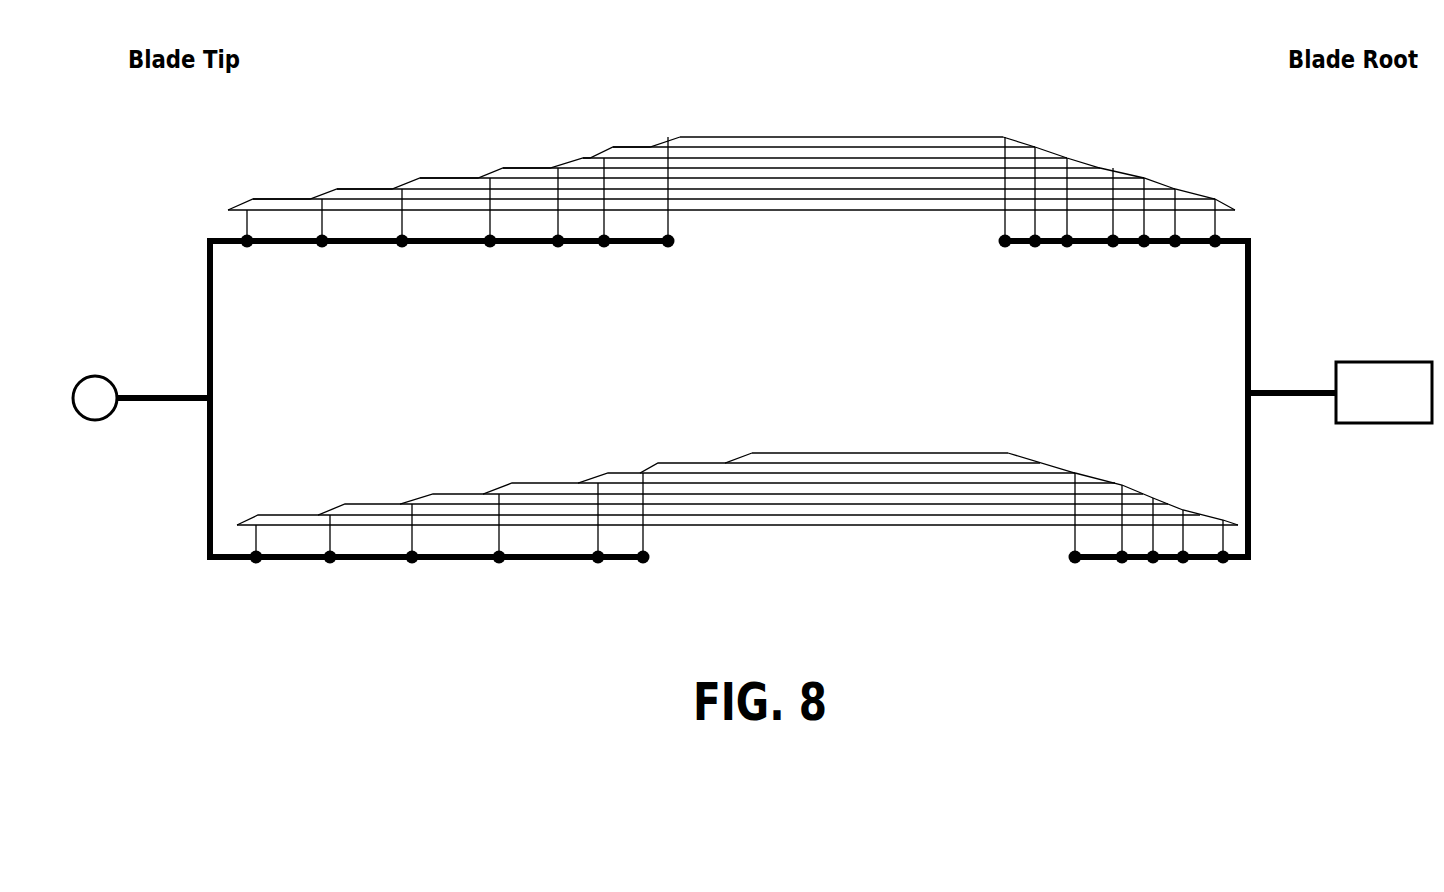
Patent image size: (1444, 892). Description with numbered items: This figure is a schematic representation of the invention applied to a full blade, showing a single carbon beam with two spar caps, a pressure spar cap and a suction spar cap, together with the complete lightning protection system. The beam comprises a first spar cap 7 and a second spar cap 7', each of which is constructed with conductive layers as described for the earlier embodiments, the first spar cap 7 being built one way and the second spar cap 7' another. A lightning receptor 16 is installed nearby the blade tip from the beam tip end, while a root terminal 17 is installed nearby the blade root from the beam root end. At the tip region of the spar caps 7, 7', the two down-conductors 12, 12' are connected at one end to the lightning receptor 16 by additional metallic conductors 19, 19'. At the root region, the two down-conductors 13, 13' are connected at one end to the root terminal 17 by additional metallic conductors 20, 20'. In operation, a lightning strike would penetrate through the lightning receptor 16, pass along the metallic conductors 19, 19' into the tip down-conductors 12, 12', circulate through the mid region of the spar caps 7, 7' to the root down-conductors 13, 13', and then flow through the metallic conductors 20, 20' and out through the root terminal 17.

The first spar cap 7 is at (731, 131).
The second spar cap 7' is at (737, 458).
The down-conductor of the tip region 12 is at (442, 283).
The down-conductor of the tip region 12' is at (430, 598).
The down-conductor of the root region 13 is at (1124, 283).
The down-conductor of the root region 13' is at (1158, 598).
The lightning receptor 16 is at (93, 396).
The root terminal 17 is at (1381, 385).
The additional metallic conductor 19 is at (161, 309).
The additional metallic conductor 19' is at (164, 479).
The additional metallic conductor 20 is at (1299, 310).
The additional metallic conductor 20' is at (1302, 476).